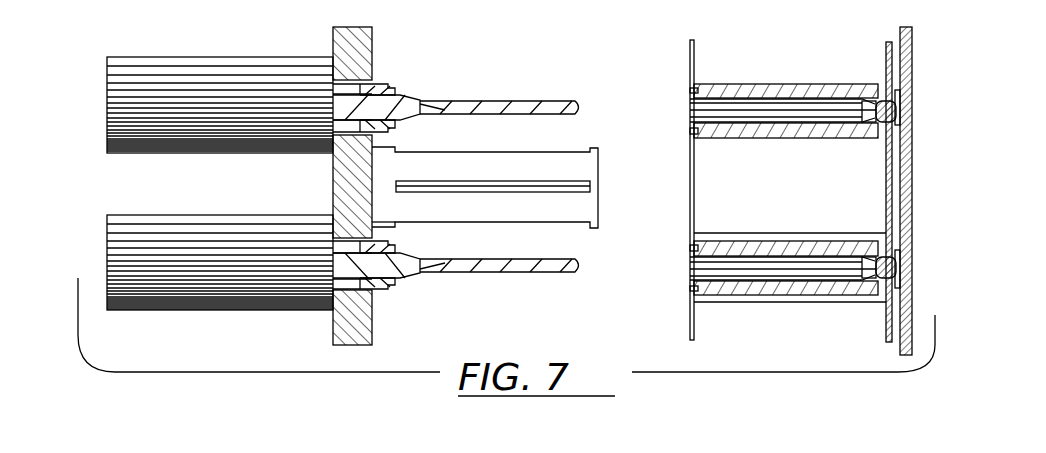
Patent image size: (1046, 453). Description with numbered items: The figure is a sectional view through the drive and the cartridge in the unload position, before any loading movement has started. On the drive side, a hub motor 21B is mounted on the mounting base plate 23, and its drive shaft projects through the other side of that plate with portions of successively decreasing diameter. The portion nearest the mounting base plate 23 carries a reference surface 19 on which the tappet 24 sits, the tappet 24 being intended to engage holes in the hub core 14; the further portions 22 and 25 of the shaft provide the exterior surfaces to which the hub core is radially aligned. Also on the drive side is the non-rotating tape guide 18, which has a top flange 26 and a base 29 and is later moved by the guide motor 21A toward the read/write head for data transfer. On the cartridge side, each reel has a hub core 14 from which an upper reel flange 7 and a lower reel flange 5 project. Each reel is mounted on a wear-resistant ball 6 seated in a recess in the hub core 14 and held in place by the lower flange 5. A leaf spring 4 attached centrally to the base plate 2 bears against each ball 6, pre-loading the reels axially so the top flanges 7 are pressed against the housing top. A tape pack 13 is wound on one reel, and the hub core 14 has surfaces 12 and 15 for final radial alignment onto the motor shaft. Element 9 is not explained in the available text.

The base plate 2 is at (912, 150).
The leaf spring 4 is at (905, 128).
The lower reel flange 5 is at (886, 62).
The wear-resistant ball 6 is at (900, 112).
The upper reel flange 7 is at (697, 42).
The retaining clip 9 is at (690, 92).
The surface 12 is at (874, 122).
The tape pack 13 is at (748, 303).
The hub core 14 is at (772, 86).
The surface 15 is at (750, 112).
The tape guide 18 is at (562, 168).
The reference surface 19 is at (386, 86).
The guide motor 21A is at (185, 280).
The hub motor 21B is at (178, 97).
The portion of the drive shaft 22 is at (535, 100).
The mounting base plate 23 is at (335, 328).
The tappet 24 is at (395, 90).
The portion of the drive shaft 25 is at (420, 107).
The top flange 26 is at (600, 198).
The base 29 is at (385, 225).